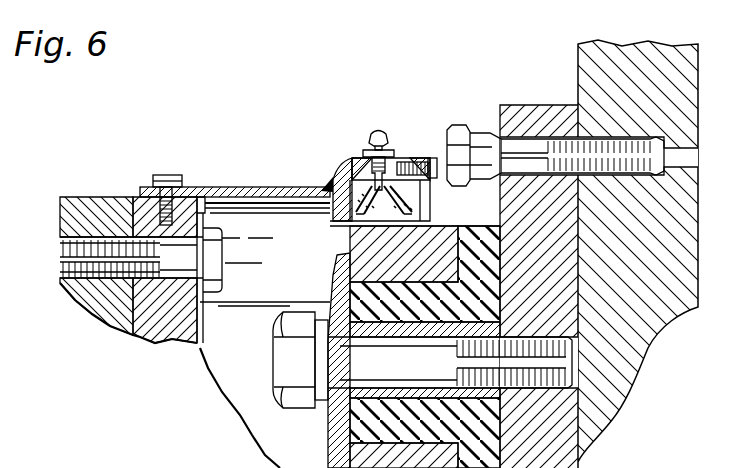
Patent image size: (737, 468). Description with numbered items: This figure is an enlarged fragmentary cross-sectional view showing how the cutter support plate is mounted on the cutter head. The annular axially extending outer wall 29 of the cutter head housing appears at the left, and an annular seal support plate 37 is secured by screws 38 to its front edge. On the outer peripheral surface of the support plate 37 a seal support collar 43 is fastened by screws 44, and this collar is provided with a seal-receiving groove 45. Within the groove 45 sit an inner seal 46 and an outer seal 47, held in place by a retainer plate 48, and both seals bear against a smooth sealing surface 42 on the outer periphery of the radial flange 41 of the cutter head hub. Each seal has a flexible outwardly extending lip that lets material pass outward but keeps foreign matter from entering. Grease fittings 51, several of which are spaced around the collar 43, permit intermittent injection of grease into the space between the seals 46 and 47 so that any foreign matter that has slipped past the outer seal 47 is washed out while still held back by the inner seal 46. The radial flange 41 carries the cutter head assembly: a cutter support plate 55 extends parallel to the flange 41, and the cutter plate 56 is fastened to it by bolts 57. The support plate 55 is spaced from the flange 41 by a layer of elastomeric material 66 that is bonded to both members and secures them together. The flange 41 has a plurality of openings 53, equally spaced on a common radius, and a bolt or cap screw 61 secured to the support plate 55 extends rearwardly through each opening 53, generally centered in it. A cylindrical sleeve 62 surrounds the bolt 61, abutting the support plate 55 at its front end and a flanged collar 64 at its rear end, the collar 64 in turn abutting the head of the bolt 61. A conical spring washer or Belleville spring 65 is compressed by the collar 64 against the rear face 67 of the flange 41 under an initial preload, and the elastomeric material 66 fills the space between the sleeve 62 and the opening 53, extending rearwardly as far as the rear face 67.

The annular axially extending outer wall 29 is at (103, 201).
The annular seal support plate 37 is at (156, 323).
The screws 38 is at (220, 270).
The radial flange 41 is at (363, 250).
The smooth sealing surface 42 is at (446, 228).
The seal support collar 43 is at (271, 185).
The screws 44 is at (173, 192).
The seal-receiving groove 45 is at (334, 180).
The inner seal 46 is at (356, 222).
The outer seal 47 is at (428, 216).
The retainer plate 48 is at (423, 162).
The grease fittings 51 is at (390, 152).
The openings 53 is at (346, 446).
The cutter support plate 55 is at (538, 106).
The cutter plate 56 is at (582, 48).
The bolts 57 is at (478, 130).
The bolt or cap screw 61 is at (288, 356).
The cylindrical sleeve 62 is at (482, 327).
The flanged collar 64 is at (312, 412).
The conical spring washer or Belleville spring 65 is at (342, 290).
The layer of elastomeric material 66 is at (414, 298).
The rear face 67 is at (344, 278).